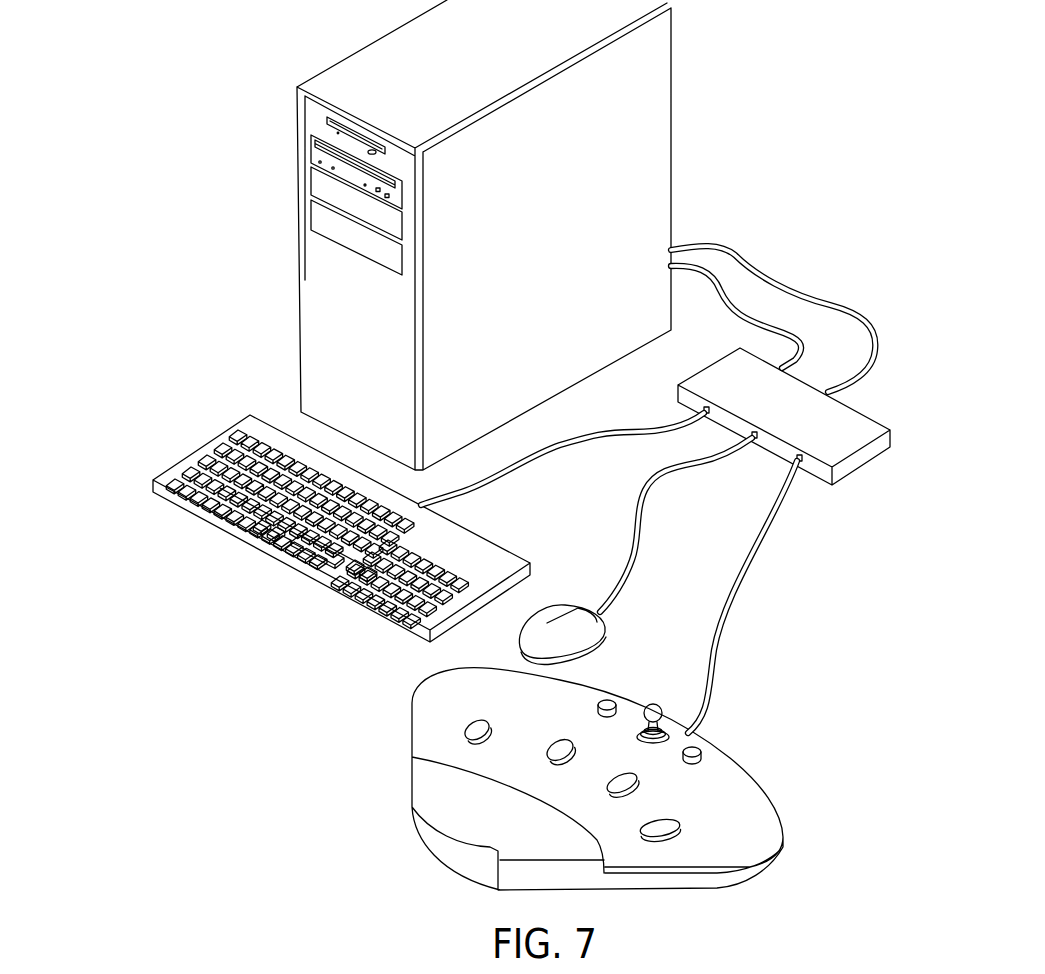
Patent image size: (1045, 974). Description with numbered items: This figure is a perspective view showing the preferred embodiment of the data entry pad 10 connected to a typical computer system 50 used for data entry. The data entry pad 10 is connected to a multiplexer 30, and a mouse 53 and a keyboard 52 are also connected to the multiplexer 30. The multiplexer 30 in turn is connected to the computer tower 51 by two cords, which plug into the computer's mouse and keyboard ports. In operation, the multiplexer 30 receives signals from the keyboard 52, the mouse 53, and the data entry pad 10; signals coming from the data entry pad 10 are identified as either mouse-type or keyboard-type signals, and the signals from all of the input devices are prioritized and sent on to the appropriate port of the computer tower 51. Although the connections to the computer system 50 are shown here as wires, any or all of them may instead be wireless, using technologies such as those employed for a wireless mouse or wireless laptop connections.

The data entry pad 10 is at (777, 766).
The multiplexer 30 is at (883, 405).
The computer system 50 is at (141, 259).
The computer tower 51 is at (308, 277).
The keyboard 52 is at (263, 535).
The mouse 53 is at (548, 622).